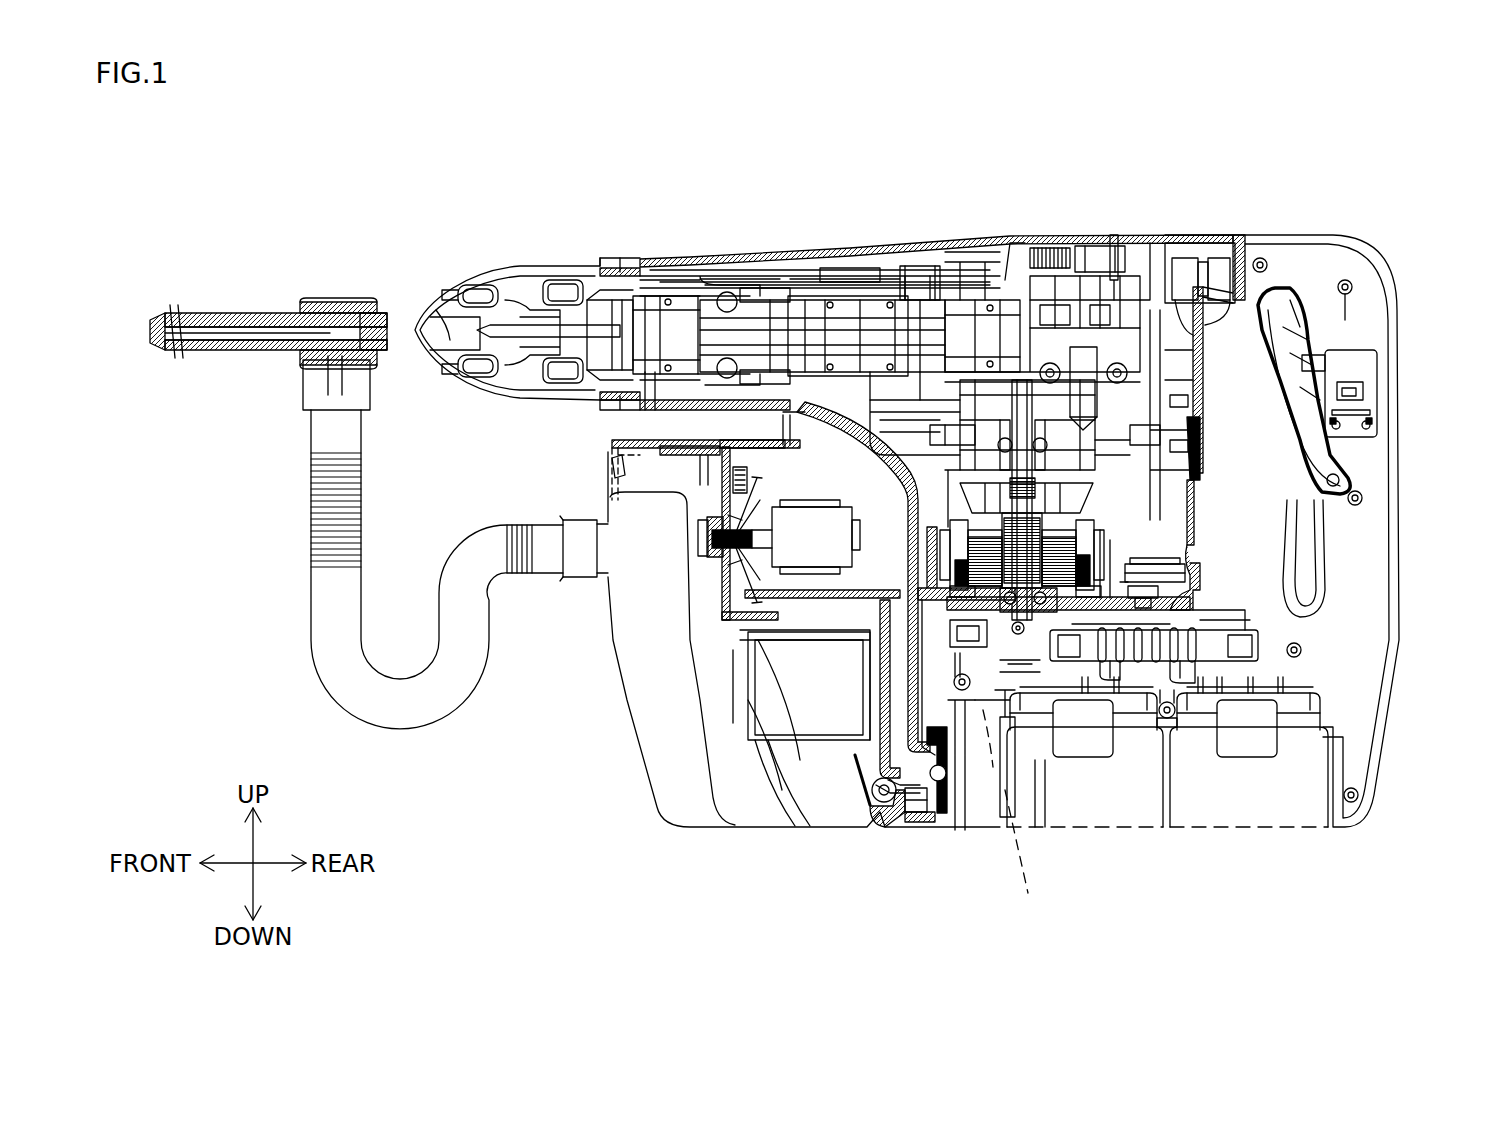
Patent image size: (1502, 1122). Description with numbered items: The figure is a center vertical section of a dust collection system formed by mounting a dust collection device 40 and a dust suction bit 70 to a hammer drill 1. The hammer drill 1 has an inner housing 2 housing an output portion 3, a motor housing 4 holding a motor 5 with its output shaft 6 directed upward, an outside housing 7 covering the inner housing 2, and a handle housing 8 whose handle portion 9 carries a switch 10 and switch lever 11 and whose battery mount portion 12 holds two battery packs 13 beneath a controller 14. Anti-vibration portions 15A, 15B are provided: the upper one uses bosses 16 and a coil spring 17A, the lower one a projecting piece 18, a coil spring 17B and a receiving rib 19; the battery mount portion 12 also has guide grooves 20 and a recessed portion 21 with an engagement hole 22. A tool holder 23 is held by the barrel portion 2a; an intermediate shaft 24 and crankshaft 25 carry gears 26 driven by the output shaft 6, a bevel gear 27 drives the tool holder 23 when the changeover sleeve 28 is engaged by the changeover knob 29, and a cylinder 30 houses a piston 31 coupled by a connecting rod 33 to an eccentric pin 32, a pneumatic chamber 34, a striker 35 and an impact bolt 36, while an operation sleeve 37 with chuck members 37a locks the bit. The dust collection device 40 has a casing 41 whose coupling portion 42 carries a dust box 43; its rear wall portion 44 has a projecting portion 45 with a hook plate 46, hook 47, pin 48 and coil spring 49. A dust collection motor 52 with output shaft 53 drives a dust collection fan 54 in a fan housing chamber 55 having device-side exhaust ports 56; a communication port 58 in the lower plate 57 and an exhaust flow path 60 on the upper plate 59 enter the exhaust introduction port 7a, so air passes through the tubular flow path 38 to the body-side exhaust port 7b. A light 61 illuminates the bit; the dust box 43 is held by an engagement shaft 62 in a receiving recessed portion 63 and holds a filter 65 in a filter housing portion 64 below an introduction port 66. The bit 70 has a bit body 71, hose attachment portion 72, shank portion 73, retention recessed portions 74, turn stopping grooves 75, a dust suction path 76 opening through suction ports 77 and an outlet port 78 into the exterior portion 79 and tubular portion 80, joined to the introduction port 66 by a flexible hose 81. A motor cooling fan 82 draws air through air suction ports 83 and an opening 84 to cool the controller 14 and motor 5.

The hammer drill 1 is at (1056, 157).
The inner housing 2 is at (858, 250).
The barrel portion 2a is at (793, 276).
The output portion 3 is at (905, 262).
The motor housing 4 is at (1098, 500).
The motor 5 is at (1090, 525).
The output shaft 6 is at (1075, 470).
The outside housing 7 is at (962, 256).
The exhaust introduction port 7a is at (760, 345).
The body-side exhaust port 7b is at (640, 402).
The handle housing 8 is at (1300, 236).
The handle portion 9 is at (1399, 468).
The switch 10 is at (1365, 375).
The switch lever 11 is at (1270, 335).
The battery mount portion 12 is at (1287, 620).
The battery pack 13 is at (1137, 832).
The controller 14 is at (1235, 640).
The anti-vibration portion 15A is at (1217, 216).
The anti-vibration portion 15B is at (1000, 700).
The boss 16 is at (1175, 262).
The coil spring 17A is at (1208, 270).
The coil spring 17B is at (1050, 740).
The projecting piece 18 is at (912, 690).
The receiving rib 19 is at (1165, 720).
The guide groove 20 is at (1033, 820).
The recessed portion 21 is at (960, 790).
The engagement hole 22 is at (930, 740).
The tool holder 23 is at (693, 300).
The intermediate shaft 24 is at (900, 495).
The crankshaft 25 is at (1095, 440).
The gear 26 is at (1095, 462).
The bevel gear 27 is at (925, 270).
The changeover sleeve 28 is at (828, 270).
The changeover knob 29 is at (1092, 240).
The cylinder 30 is at (1015, 260).
The piston 31 is at (988, 300).
The eccentric pin 32 is at (1100, 260).
The connecting rod 33 is at (1048, 300).
The pneumatic chamber 34 is at (872, 335).
The striker 35 is at (772, 312).
The impact bolt 36 is at (675, 318).
The operation sleeve 37 is at (600, 262).
The chuck member 37a is at (548, 288).
The tubular flow path 38 is at (730, 320).
The dust collection device 40 is at (769, 661).
The casing 41 is at (560, 350).
The coupling portion 42 is at (733, 678).
The dust box 43 is at (608, 752).
The rear wall portion 44 is at (865, 675).
The projecting portion 45 is at (863, 780).
The hook plate 46 is at (930, 822).
The hook 47 is at (882, 730).
The pin 48 is at (950, 815).
The coil spring 49 is at (918, 826).
The dust collection motor 52 is at (740, 558).
The output shaft 53 is at (770, 536).
The dust collection fan 54 is at (715, 556).
The fan housing chamber 55 is at (722, 614).
The device-side exhaust port 56 is at (715, 455).
The lower plate 57 is at (748, 703).
The communication port 58 is at (810, 598).
The upper plate 59 is at (760, 443).
The exhaust flow path 60 is at (772, 460).
The light 61 is at (612, 465).
The engagement shaft 62 is at (878, 805).
The receiving recessed portion 63 is at (892, 826).
The filter housing portion 64 is at (775, 720).
The filter 65 is at (783, 752).
The introduction port 66 is at (590, 518).
The dust suction bit 70 is at (347, 283).
The bit body 71 is at (258, 313).
The hose attachment portion 72 is at (345, 300).
The shank portion 73 is at (545, 310).
The retention recessed portion 74 is at (500, 295).
The turn stopping groove 75 is at (487, 360).
The dust suction path 76 is at (245, 340).
The suction port 77 is at (153, 322).
The outlet port 78 is at (335, 378).
The exterior portion 79 is at (376, 300).
The tubular portion 80 is at (358, 408).
The flexible hose 81 is at (400, 730).
The motor cooling fan 82 is at (1093, 498).
The air suction port 83 is at (1150, 615).
The opening 84 is at (1170, 570).